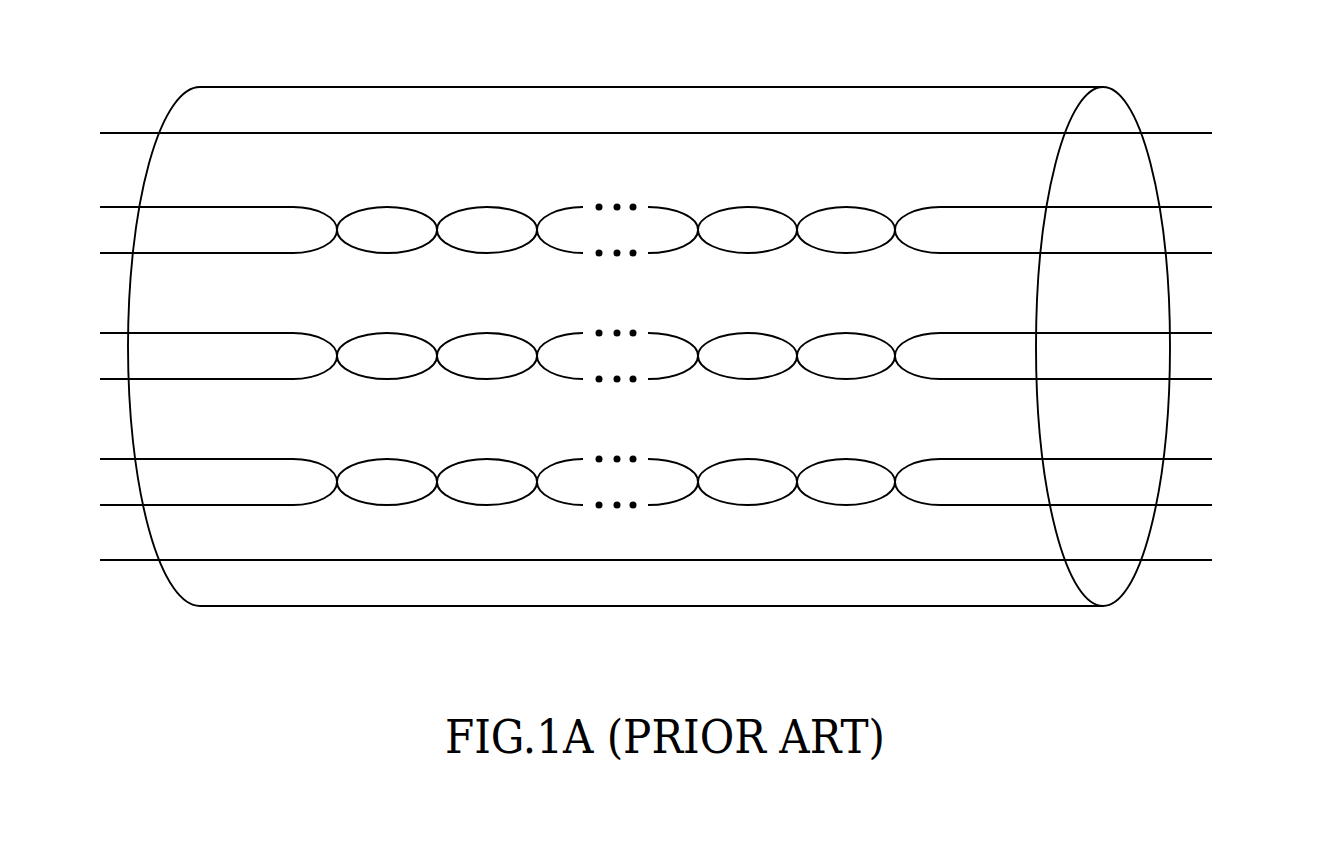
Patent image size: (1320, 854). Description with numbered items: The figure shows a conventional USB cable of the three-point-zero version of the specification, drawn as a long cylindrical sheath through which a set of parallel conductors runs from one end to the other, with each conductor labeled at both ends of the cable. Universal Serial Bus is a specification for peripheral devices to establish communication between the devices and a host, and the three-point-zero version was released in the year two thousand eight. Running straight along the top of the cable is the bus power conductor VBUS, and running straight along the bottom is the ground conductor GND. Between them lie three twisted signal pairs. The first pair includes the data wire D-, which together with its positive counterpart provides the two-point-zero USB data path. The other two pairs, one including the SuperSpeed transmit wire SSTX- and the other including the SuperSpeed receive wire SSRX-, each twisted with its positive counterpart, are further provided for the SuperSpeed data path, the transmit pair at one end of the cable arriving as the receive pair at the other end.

The USB 3.0 cable is at (649, 346).
The element VBUS is at (652, 128).
The element GND is at (652, 560).
The D− D- is at (653, 238).
The SSTX− SSTX- is at (653, 364).
The SSRX− SSRX- is at (653, 490).